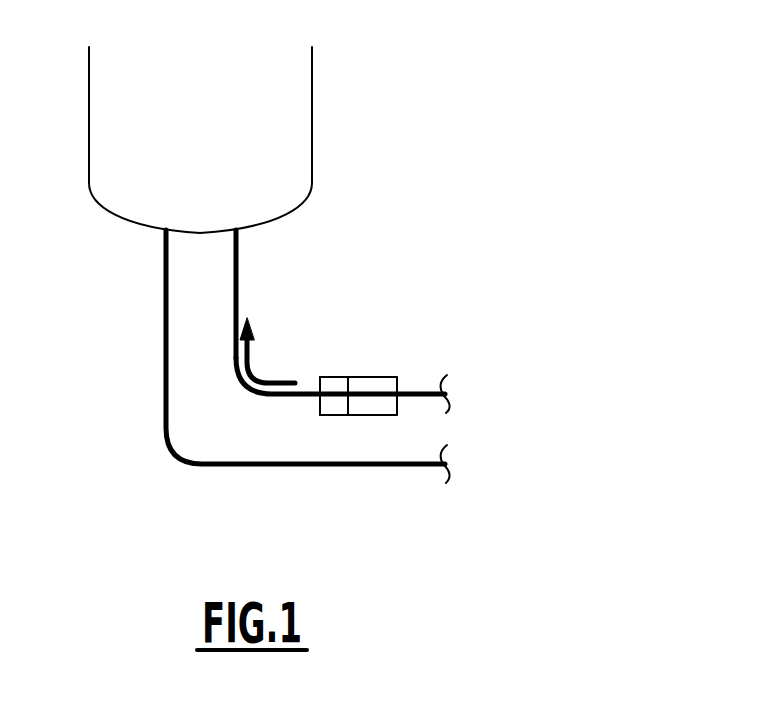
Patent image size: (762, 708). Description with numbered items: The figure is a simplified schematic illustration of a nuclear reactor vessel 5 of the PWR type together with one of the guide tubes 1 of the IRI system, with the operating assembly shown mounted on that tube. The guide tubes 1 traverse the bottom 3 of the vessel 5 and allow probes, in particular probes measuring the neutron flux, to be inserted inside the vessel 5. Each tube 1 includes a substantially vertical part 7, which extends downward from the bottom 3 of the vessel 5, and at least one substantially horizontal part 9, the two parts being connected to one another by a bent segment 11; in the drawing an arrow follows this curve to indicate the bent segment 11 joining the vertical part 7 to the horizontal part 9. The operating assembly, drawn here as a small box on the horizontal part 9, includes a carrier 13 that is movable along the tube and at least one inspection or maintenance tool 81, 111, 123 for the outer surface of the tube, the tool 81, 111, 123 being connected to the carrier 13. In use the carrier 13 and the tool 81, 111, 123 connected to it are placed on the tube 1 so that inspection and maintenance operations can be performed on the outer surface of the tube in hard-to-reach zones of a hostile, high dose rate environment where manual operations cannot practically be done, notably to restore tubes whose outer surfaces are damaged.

The guide tube 1 is at (128, 350).
The bottom 3 is at (117, 215).
The vessel 5 is at (312, 127).
The vertical part 7 is at (237, 260).
The horizontal part 9 is at (308, 398).
The bent segment 11 is at (242, 380).
The carrier 13 is at (382, 376).
The tool 81 is at (388, 347).
The tool 111 is at (388, 347).
The tool 123 is at (340, 377).